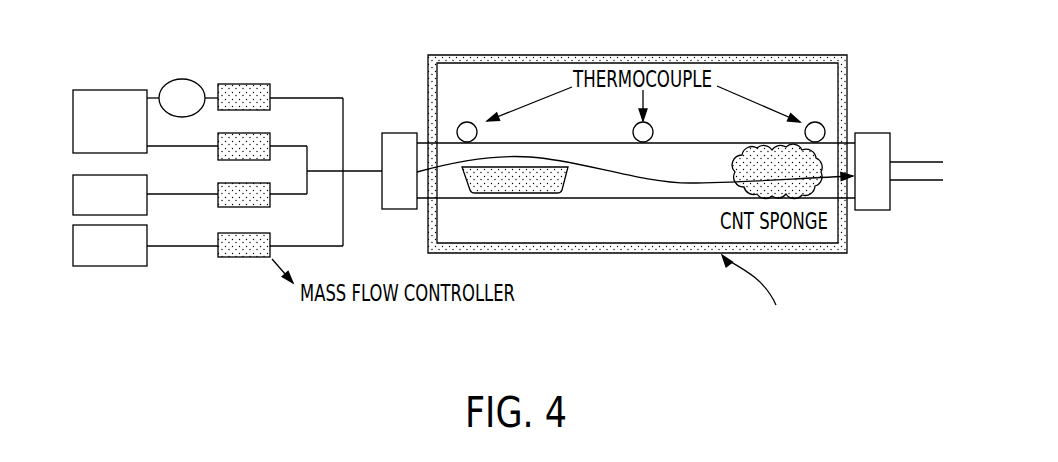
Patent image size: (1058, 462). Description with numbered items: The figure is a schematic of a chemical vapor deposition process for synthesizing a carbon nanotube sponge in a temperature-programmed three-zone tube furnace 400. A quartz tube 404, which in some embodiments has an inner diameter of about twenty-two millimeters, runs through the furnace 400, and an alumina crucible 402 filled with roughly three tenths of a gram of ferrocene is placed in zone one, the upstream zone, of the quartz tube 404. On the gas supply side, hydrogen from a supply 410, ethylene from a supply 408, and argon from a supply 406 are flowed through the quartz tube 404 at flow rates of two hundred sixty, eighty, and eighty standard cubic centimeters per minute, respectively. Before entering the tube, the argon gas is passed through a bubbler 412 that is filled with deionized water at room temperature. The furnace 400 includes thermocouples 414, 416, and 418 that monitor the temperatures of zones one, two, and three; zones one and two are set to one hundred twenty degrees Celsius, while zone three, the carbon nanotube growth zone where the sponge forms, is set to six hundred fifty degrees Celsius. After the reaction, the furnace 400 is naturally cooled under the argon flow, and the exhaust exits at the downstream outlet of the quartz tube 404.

The furnace 400 is at (833, 254).
The alumina crucible 402 is at (568, 170).
The quartz tube 404 is at (641, 200).
The supply 406 is at (110, 90).
The supply 408 is at (147, 184).
The supply 410 is at (147, 236).
The bubbler 412 is at (180, 78).
The thermocouple 414 is at (458, 127).
The thermocouple 416 is at (654, 130).
The thermocouple 418 is at (825, 125).